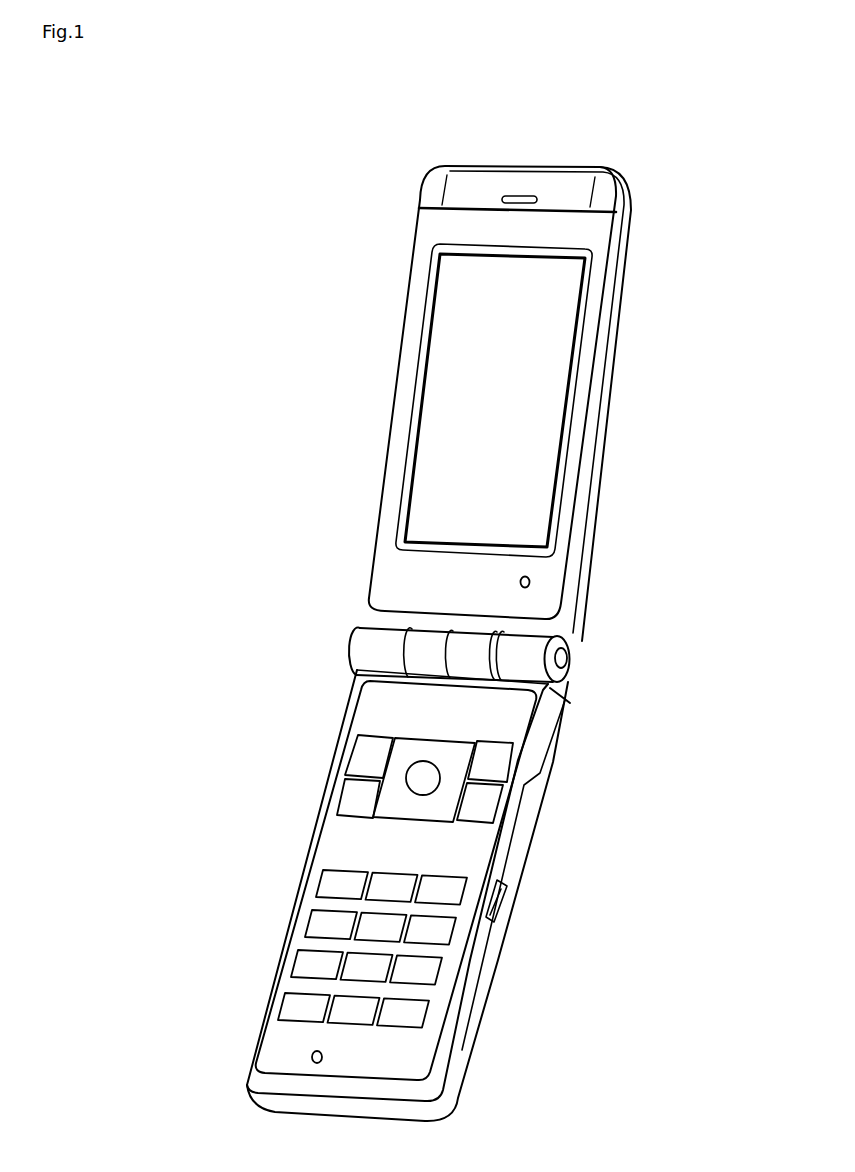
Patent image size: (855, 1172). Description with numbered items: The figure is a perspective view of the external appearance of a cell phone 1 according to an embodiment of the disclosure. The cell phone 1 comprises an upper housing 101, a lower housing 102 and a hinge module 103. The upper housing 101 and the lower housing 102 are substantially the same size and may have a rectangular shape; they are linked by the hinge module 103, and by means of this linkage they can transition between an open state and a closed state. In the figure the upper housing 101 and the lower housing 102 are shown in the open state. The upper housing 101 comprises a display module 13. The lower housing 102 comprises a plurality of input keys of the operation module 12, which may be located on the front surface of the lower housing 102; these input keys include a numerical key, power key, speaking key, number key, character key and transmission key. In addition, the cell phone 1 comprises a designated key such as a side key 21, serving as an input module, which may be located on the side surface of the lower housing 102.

The cell phone 1 is at (654, 155).
The upper housing 101 is at (605, 405).
The lower housing 102 is at (552, 763).
The hinge module 103 is at (571, 658).
The display module 13 is at (462, 375).
The operation module 12 is at (318, 881).
The side key 21 is at (502, 897).